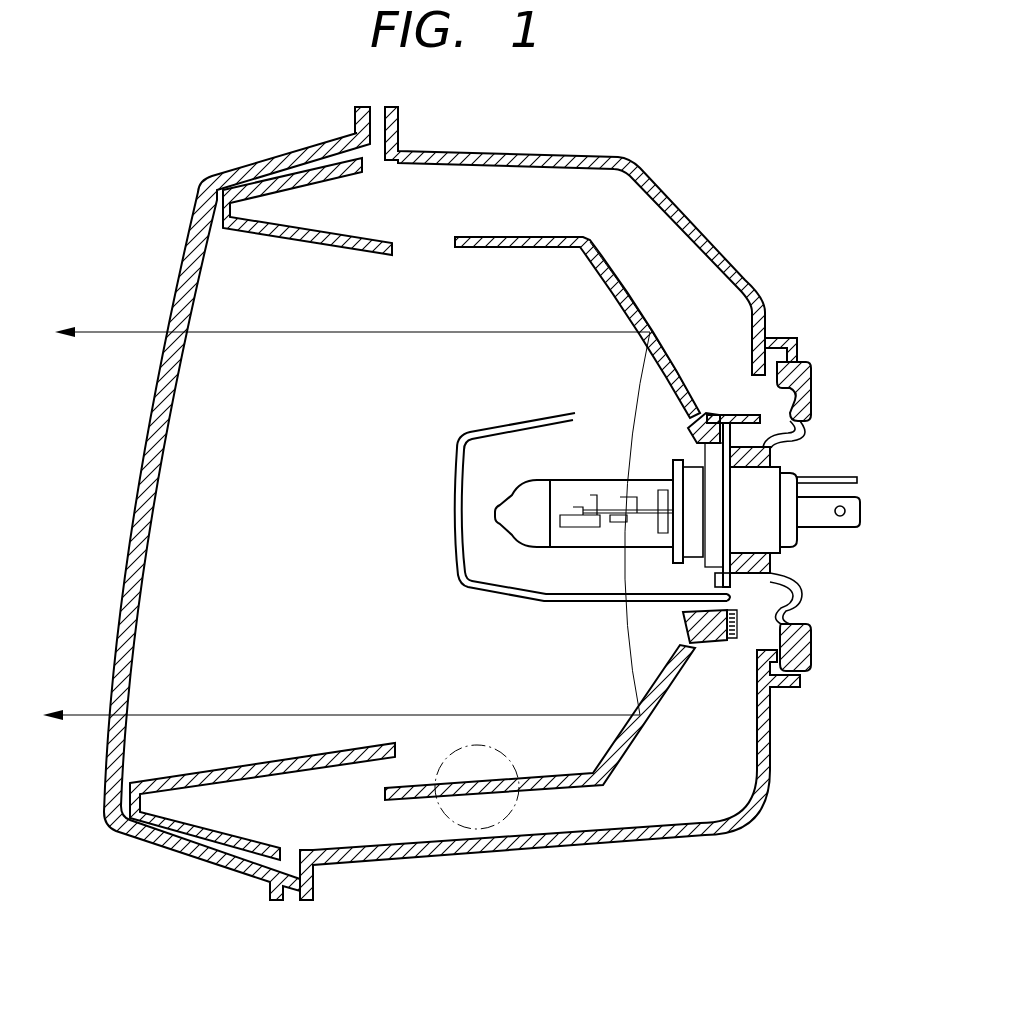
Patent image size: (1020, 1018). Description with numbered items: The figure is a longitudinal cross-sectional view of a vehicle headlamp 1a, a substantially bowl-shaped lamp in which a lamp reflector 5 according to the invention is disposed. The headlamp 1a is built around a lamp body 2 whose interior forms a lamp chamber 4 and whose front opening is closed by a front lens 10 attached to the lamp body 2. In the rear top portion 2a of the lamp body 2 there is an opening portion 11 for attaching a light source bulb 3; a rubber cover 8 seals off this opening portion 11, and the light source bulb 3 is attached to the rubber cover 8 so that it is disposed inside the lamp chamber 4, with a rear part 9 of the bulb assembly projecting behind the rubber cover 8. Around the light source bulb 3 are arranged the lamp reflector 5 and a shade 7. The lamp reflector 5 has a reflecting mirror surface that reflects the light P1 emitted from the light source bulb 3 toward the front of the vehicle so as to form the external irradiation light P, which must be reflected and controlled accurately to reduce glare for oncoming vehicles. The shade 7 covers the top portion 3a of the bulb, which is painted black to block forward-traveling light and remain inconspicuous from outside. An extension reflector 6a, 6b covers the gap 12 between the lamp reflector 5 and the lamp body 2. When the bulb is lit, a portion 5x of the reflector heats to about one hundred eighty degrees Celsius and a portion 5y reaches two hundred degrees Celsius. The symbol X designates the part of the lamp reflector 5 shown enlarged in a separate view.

The vehicle headlamp 1a is at (692, 179).
The lamp body 2 is at (767, 305).
The rear top portion of the lamp body 2a is at (767, 327).
The light source bulb 3 is at (636, 481).
The top portion of the light source bulb 3a is at (523, 497).
The lamp chamber 4 is at (322, 494).
The lamp reflector 5 is at (608, 283).
The portion of the reflecting mirror 5x is at (610, 282).
The portion of the reflecting mirror 5y is at (693, 436).
The extension reflector 6a is at (323, 236).
The extension reflector 6b is at (293, 770).
The shade 7 is at (455, 568).
The rubber cover 8 is at (810, 373).
The connector 9 is at (817, 518).
The front lens 10 is at (143, 428).
The opening portion 11 is at (810, 625).
The gap 12 is at (448, 209).
The external irradiation light P is at (55, 722).
The light emitted from the light source bulb P1 is at (100, 331).
The enlarged part of the lamp reflector X is at (443, 819).